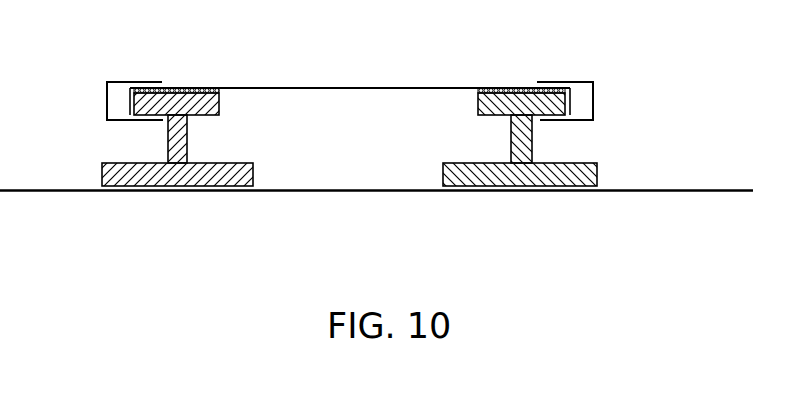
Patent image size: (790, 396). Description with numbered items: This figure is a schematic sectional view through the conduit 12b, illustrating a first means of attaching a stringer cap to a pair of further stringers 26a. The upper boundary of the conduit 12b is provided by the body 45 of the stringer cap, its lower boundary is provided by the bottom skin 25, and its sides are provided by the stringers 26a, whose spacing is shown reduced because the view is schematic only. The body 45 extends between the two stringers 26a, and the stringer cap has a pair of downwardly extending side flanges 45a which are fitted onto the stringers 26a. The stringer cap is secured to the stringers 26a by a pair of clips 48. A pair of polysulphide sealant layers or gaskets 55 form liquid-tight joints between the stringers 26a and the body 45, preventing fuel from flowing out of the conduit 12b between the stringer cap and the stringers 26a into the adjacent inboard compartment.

The body of stringer cap 45 is at (325, 88).
The conduit 12b is at (383, 157).
The clip 48 is at (107, 104).
The side flange 45a is at (573, 107).
The further stringer 26a is at (170, 166).
The polysulphide sealant layer or gasket 55 is at (155, 96).
The bottom skin 25 is at (320, 191).